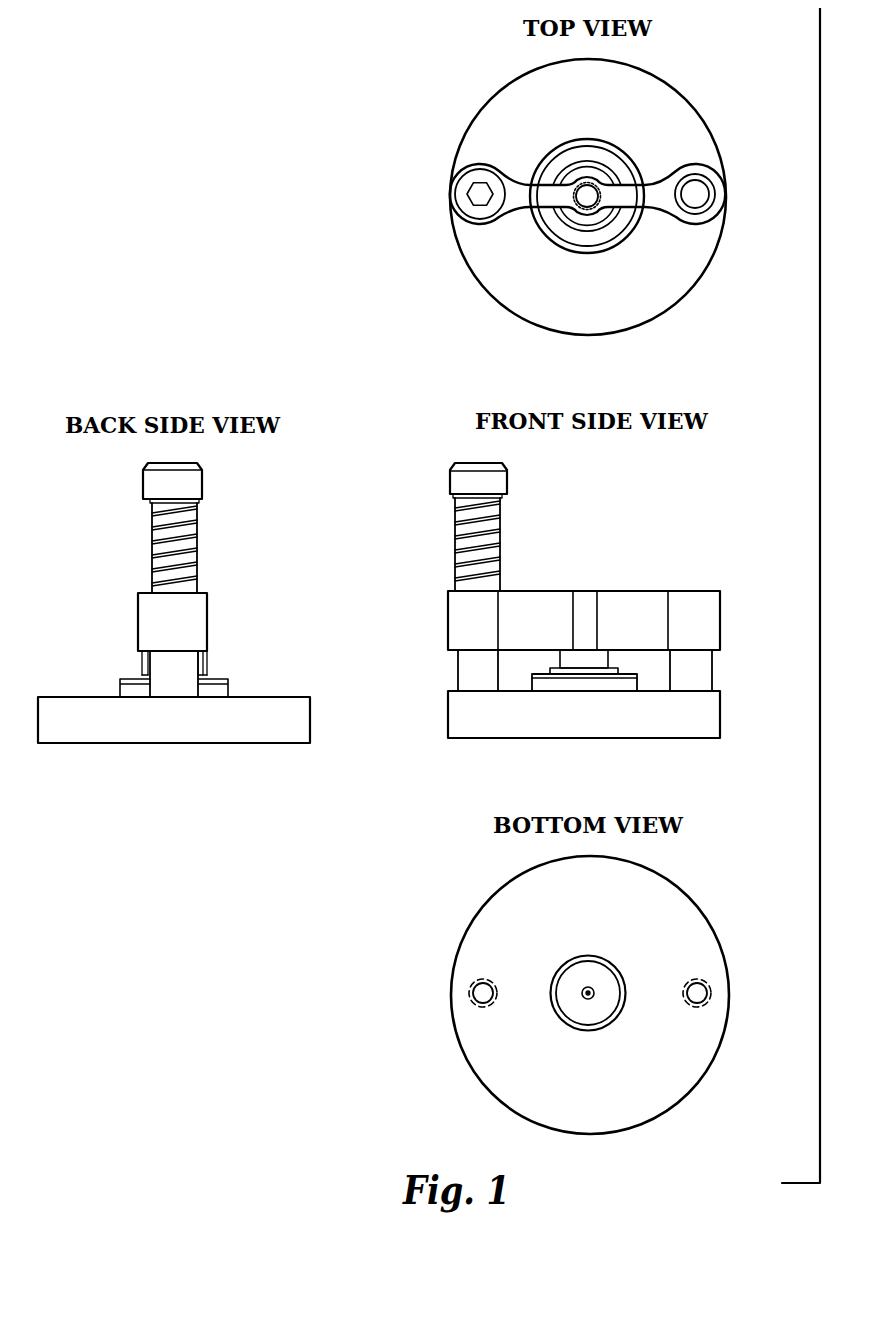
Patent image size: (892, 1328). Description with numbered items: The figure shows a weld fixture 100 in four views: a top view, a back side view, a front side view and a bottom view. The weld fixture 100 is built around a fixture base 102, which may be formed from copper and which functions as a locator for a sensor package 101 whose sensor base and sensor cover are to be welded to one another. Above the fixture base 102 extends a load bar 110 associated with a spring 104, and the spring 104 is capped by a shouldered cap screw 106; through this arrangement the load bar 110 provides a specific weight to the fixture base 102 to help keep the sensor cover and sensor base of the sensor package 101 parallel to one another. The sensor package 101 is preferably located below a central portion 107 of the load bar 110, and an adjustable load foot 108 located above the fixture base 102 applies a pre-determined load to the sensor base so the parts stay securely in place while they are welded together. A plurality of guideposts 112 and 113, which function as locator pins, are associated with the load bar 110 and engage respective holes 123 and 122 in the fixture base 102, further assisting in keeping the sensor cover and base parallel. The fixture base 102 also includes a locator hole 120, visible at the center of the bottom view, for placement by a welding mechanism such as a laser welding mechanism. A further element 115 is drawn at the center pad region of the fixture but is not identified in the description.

The weld fixture 100 is at (398, 99).
The sensor package 101 is at (143, 673).
The fixture base 102 is at (612, 307).
The spring 104 is at (152, 546).
The shouldered cap screw 106 is at (453, 185).
The central portion 107 is at (553, 170).
The adjustable load foot 108 is at (550, 657).
The load bar 110 is at (540, 206).
The guidepost 112 is at (702, 197).
The guidepost 113 is at (478, 195).
The center pad 115 is at (607, 681).
The locator hole 120 is at (600, 998).
The hole 122 is at (702, 992).
The hole 123 is at (478, 992).